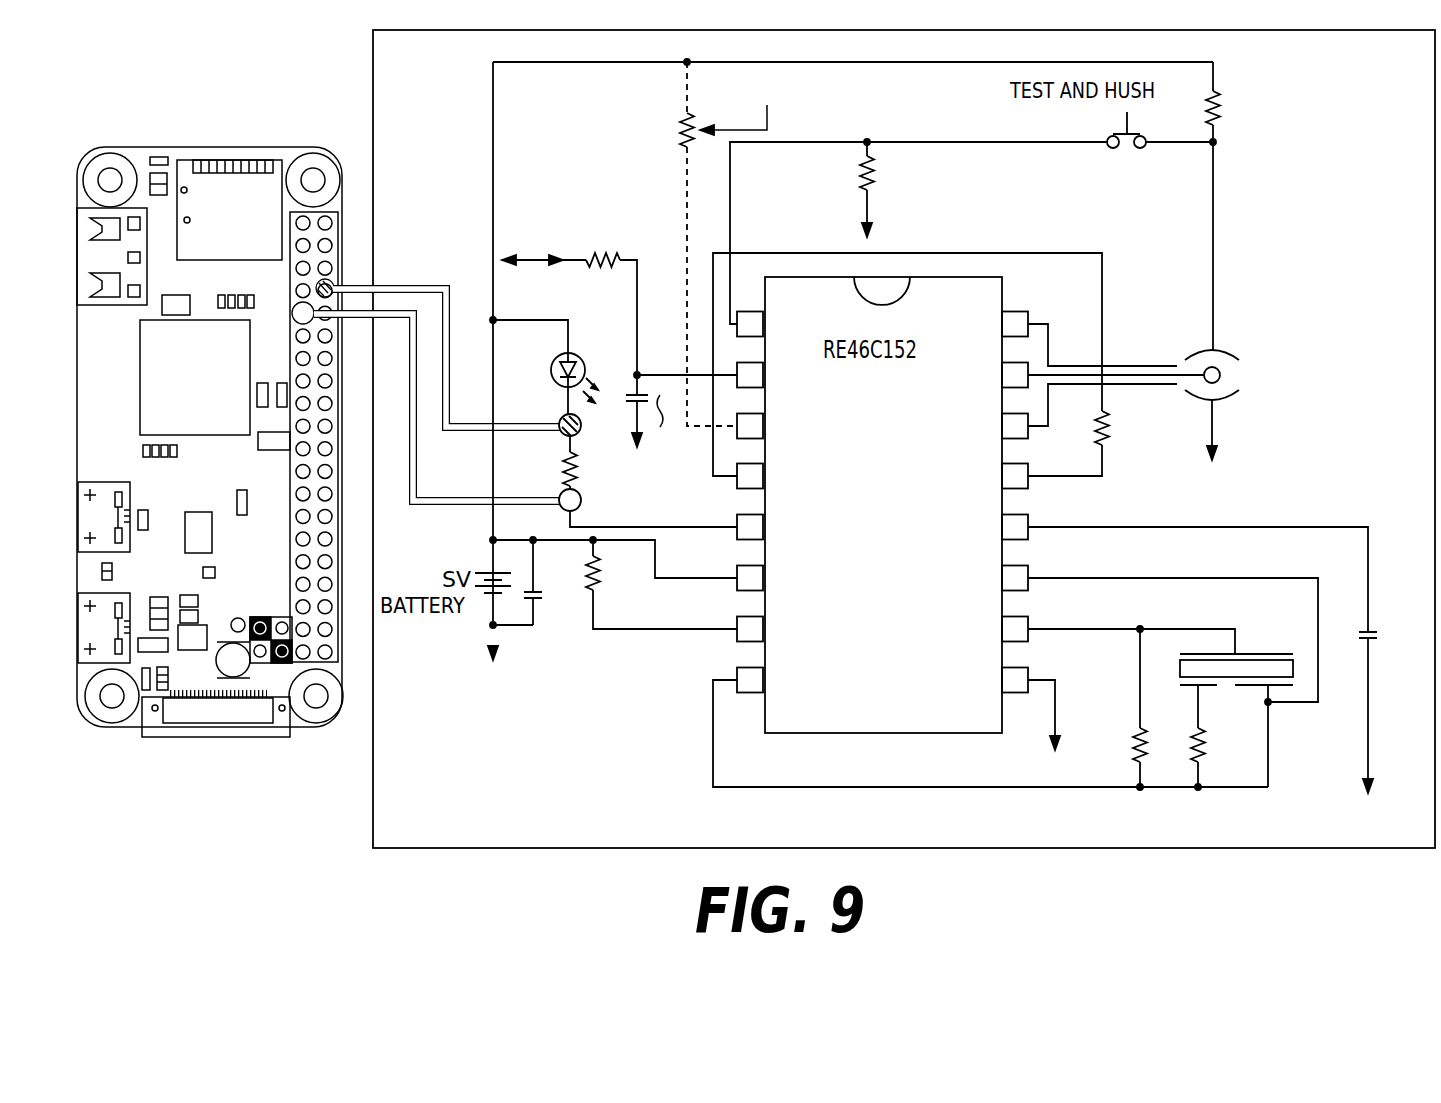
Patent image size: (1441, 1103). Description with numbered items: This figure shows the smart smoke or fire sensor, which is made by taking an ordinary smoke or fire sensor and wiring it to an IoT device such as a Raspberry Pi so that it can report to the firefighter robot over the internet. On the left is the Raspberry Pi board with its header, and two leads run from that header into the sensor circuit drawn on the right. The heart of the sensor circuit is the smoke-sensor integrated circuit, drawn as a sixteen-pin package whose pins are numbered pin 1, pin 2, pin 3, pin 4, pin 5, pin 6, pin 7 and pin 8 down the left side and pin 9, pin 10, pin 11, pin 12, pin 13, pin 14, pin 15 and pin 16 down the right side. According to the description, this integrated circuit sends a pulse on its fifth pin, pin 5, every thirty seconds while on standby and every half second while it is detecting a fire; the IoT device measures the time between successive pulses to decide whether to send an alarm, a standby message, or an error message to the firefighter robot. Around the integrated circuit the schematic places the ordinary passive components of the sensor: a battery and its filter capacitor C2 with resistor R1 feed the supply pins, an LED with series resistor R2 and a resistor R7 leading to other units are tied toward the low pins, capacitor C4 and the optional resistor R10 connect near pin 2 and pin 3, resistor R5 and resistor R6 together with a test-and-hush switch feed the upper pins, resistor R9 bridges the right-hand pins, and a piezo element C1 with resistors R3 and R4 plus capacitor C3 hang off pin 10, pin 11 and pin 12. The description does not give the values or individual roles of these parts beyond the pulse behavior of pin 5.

The resistor R1 8.2M R1 is at (661, 584).
The resistor R2 300 R2 is at (597, 464).
The resistor R3 1.5M R3 is at (1167, 709).
The resistor R4 220K R4 is at (1231, 754).
The resistor R5 100K R5 is at (900, 188).
The resistor R6 66K R6 is at (1239, 103).
The resistor R7 100 to other units R7 is at (591, 301).
The resistor R9 is at (930, 364).
The optional resistor R10 1.5K R10 is at (725, 244).
The capacitor C1 .001vF (piezo) C1 is at (1270, 720).
The capacitor C2 5vF C2 is at (554, 582).
The capacitor C3 .1vF C3 is at (1233, 660).
The capacitor C4 10vF C4 is at (681, 426).
The IC pin 1 is at (762, 324).
The IC pin 2 is at (762, 375).
The IC pin 3 is at (762, 426).
The IC pin 4 is at (762, 476).
The fifth pin 5 is at (762, 527).
The IC pin 6 is at (762, 578).
The IC pin 7 is at (762, 629).
The IC pin 8 is at (762, 680).
The IC pin 9 is at (1003, 680).
The IC pin 10 is at (997, 629).
The IC pin 11 is at (997, 578).
The IC pin 12 is at (997, 527).
The IC pin 13 is at (997, 476).
The IC pin 14 is at (997, 426).
The IC pin 15 is at (997, 375).
The IC pin 16 is at (997, 324).